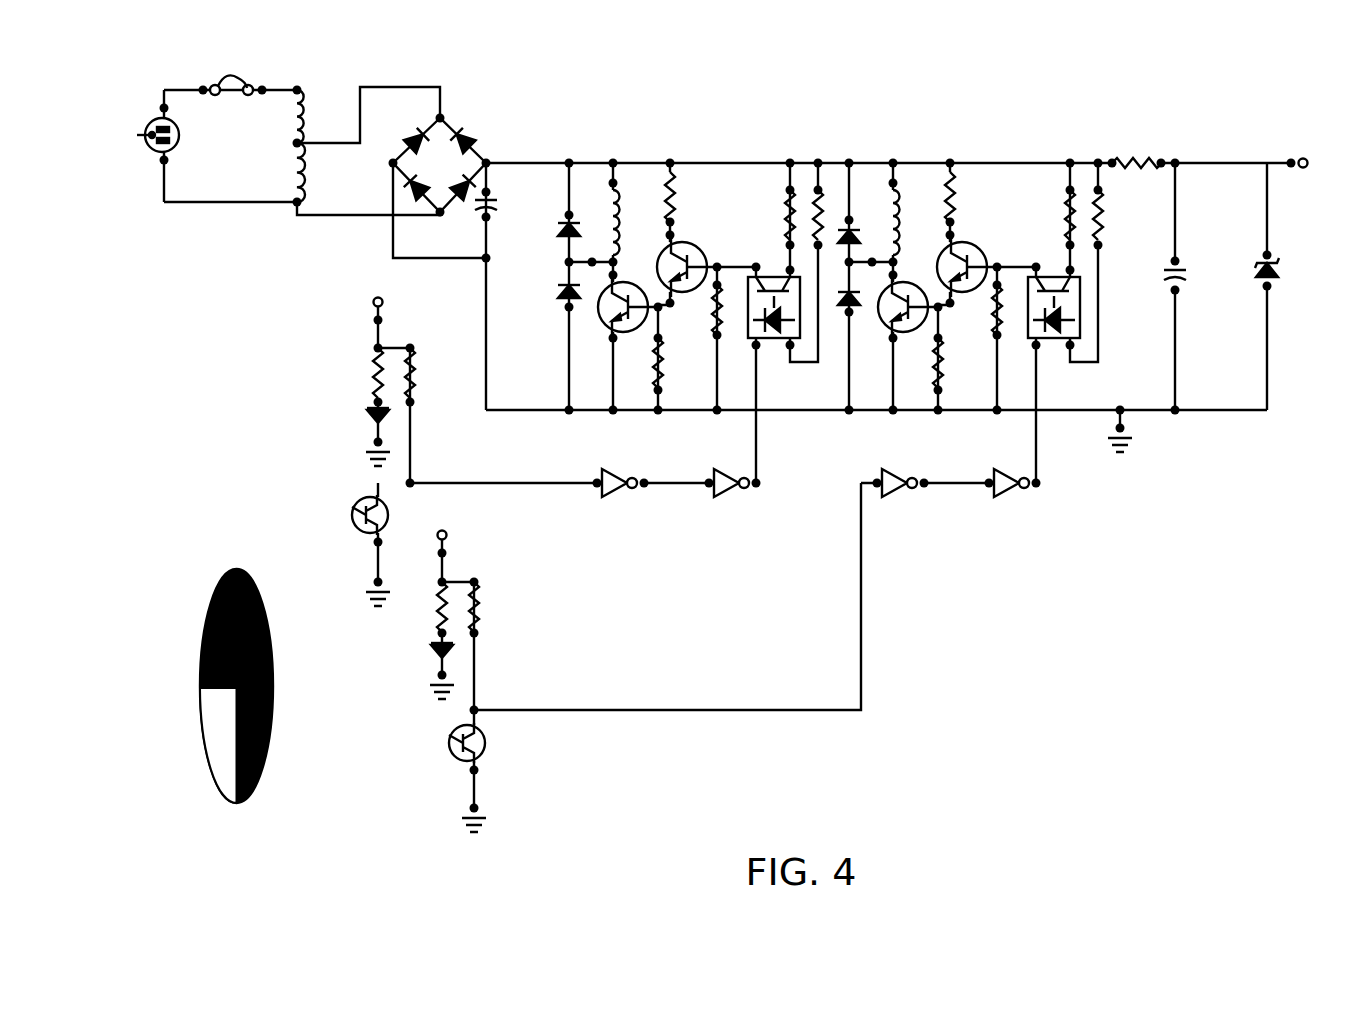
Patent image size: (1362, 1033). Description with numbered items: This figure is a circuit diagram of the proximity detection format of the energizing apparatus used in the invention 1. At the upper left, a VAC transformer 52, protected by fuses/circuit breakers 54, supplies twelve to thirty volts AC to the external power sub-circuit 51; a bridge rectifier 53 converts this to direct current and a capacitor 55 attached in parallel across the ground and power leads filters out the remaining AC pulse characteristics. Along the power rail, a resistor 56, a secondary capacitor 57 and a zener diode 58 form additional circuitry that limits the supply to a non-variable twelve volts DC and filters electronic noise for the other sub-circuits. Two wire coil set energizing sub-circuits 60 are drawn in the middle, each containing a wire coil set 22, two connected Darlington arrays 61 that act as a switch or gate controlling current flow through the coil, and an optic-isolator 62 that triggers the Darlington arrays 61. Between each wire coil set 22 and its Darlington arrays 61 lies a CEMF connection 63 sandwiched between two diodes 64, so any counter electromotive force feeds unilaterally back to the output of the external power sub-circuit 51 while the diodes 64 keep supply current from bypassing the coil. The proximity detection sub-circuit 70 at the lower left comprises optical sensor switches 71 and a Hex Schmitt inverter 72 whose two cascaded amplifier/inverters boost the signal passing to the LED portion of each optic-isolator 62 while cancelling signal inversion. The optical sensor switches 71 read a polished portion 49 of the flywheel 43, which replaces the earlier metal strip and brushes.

The invention 1 is at (1198, 478).
The wire coil set 22 is at (621, 240).
The flywheel 43 is at (210, 679).
The polished portion 49 is at (207, 718).
The external power sub-circuit 51 is at (424, 80).
The VAC transformer 52 is at (314, 78).
The bridge rectifier 53 is at (456, 135).
The fuses/circuit breakers 54 is at (232, 88).
The capacitor 55 is at (497, 206).
The resistor 56 is at (1138, 158).
The secondary capacitor 57 is at (1183, 278).
The zener diode 58 is at (1277, 295).
The wire coil set energizing sub-circuit 60 is at (806, 267).
The Darlington array 61 is at (690, 243).
The optic-isolator 62 is at (770, 340).
The CEMF connection 63 is at (592, 262).
The diode 64 is at (560, 232).
The proximity detection sub-circuit 70 is at (840, 742).
The optical sensor switch 71 is at (350, 462).
The Hex Schmitt inverter 72 is at (618, 492).